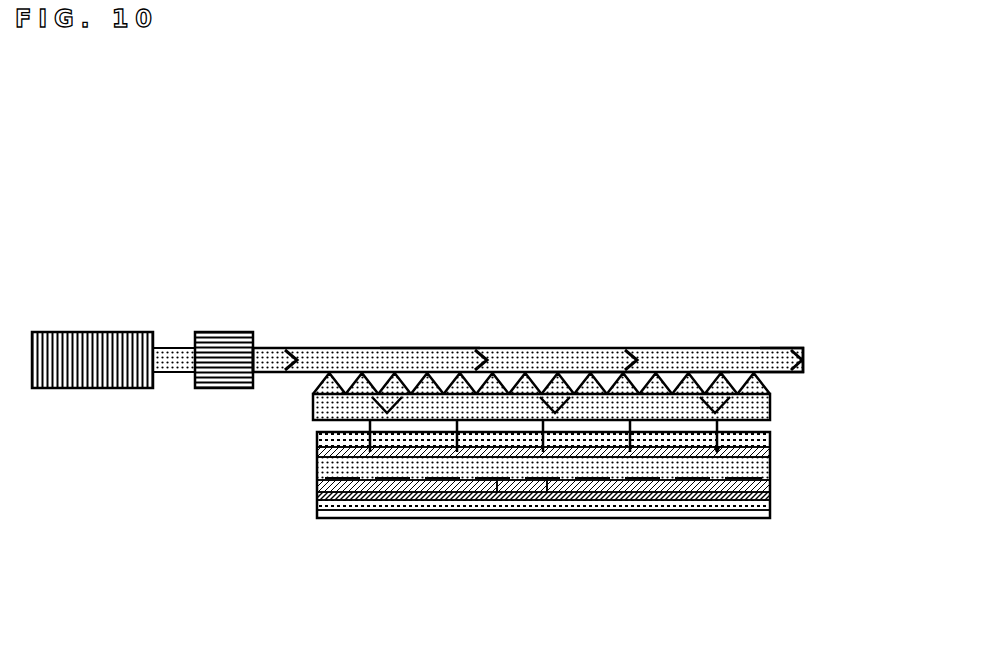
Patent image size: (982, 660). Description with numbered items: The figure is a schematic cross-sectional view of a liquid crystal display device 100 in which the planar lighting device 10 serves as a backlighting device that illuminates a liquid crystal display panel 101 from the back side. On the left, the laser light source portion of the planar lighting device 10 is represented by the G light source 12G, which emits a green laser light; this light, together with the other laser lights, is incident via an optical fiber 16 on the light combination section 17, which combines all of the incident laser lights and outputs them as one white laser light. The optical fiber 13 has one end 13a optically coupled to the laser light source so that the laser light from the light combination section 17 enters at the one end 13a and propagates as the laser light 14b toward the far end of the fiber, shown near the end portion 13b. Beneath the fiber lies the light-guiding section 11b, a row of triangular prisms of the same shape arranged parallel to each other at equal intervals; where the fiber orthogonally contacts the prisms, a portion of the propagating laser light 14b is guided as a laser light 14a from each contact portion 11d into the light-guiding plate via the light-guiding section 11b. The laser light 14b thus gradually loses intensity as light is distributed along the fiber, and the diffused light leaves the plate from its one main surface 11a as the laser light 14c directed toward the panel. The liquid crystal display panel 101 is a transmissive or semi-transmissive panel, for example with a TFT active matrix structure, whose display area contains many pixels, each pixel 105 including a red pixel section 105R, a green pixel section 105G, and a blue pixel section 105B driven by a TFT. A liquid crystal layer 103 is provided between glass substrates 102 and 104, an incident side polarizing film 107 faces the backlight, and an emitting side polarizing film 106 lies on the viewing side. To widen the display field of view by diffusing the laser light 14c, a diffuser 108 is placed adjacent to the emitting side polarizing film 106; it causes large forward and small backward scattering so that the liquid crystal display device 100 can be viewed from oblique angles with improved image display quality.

The liquid crystal display device 100 is at (84, 201).
The planar lighting device 10 is at (264, 404).
The G light source 12G is at (114, 350).
The optical fiber 16 is at (180, 356).
The light combination section 17 is at (228, 356).
The optical fiber 13 is at (568, 350).
The one end 13a is at (258, 350).
The light emitting end of light guide plate 13b is at (706, 362).
The laser light 14a is at (583, 364).
The laser light 14b is at (434, 355).
The laser light 14c is at (770, 448).
The contact portion 11d is at (728, 365).
The light-guiding section 11b is at (766, 388).
The one main surface 11a is at (768, 419).
The liquid crystal display panel 101 is at (915, 578).
The glass substrate 102 is at (611, 494).
The liquid crystal layer 103 is at (698, 481).
The glass substrate 104 is at (740, 492).
The pixel 105 is at (652, 486).
The red pixel section 105R is at (497, 484).
The green pixel section 105G is at (547, 484).
The blue pixel section 105B is at (592, 484).
The emitting side polarizing film 106 is at (772, 512).
The incident side polarizing film 107 is at (580, 500).
The diffuser 108 is at (772, 504).